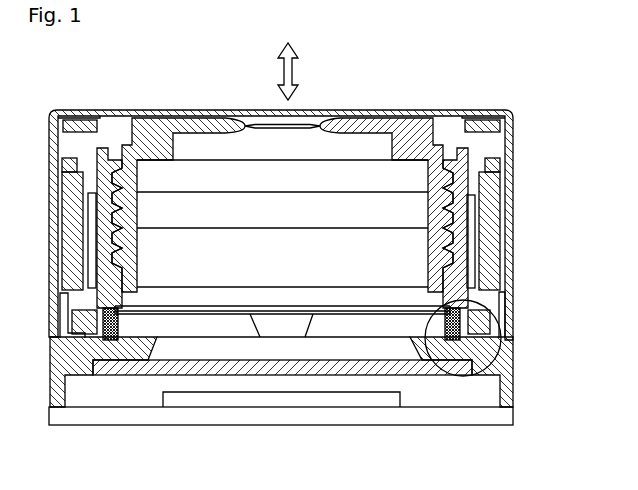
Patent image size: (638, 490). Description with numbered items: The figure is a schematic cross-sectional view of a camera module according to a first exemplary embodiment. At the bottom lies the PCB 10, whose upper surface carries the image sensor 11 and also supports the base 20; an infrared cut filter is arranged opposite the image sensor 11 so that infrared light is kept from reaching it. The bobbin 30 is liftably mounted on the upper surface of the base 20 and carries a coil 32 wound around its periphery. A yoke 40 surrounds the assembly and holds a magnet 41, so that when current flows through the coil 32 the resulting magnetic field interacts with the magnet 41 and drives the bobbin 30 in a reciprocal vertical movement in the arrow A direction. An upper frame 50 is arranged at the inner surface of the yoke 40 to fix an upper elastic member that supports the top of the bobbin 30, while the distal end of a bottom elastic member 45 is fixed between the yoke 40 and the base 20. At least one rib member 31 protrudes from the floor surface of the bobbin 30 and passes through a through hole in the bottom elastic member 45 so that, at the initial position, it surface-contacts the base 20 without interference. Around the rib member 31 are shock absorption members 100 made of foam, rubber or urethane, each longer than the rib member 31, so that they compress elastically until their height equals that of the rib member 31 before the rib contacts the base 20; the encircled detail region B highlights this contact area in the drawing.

The PCB 10 is at (505, 415).
The image sensor 11 is at (245, 403).
The base 20 is at (507, 355).
The bobbin 30 is at (467, 155).
The rib member 31 is at (285, 325).
The coil 32 is at (473, 217).
The yoke 40 is at (507, 120).
The magnet 41 is at (500, 197).
The bottom elastic member 45 is at (208, 314).
The upper frame 50 is at (500, 170).
The shock absorption member 100 is at (458, 357).
The arrow A direction A is at (296, 71).
The detail region B is at (493, 303).